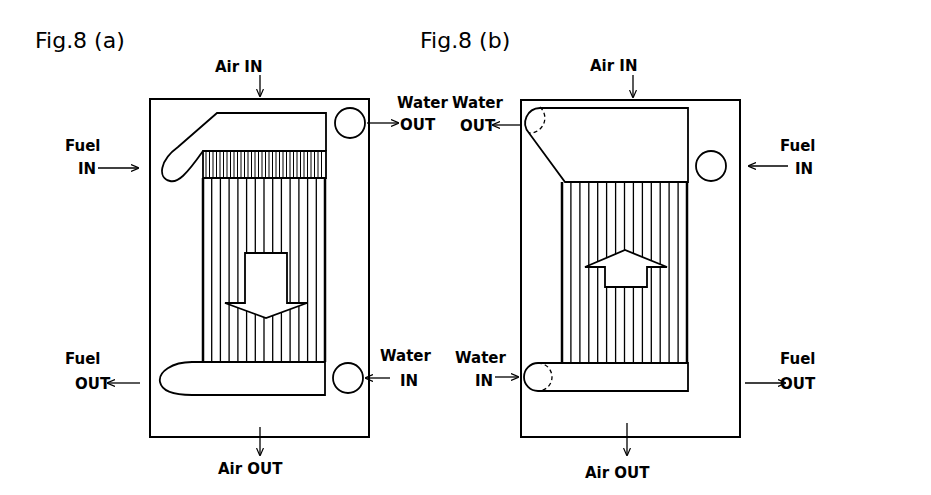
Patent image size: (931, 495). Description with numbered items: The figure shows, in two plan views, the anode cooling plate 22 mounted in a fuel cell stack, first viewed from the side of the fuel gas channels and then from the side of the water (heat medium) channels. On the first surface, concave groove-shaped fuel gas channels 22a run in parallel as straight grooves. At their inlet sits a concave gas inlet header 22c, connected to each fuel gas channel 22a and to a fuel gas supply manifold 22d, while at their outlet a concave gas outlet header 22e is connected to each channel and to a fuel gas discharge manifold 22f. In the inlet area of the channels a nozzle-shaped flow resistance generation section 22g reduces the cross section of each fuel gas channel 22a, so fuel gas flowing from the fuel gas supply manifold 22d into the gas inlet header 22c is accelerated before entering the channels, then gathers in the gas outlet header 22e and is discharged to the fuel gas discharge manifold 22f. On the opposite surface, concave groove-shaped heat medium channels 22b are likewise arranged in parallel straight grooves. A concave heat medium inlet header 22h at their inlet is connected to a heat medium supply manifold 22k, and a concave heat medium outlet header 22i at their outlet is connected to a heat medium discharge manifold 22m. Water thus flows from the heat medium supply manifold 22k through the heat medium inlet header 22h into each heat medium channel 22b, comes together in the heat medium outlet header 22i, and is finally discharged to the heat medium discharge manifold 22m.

The anode cooling plate 22 is at (358, 262).
The fuel gas channels 22a is at (313, 210).
The heat medium channels 22b is at (672, 282).
The gas inlet header 22c is at (288, 126).
The fuel gas supply manifold 22d is at (166, 178).
The gas outlet header 22e is at (300, 387).
The fuel gas discharge manifold 22f is at (163, 390).
The flow resistance generation section 22g is at (327, 165).
The heat medium inlet header 22h is at (658, 382).
The heat medium outlet header 22i is at (657, 127).
The heat medium supply manifold 22k is at (532, 388).
The heat medium discharge manifold 22m is at (528, 139).